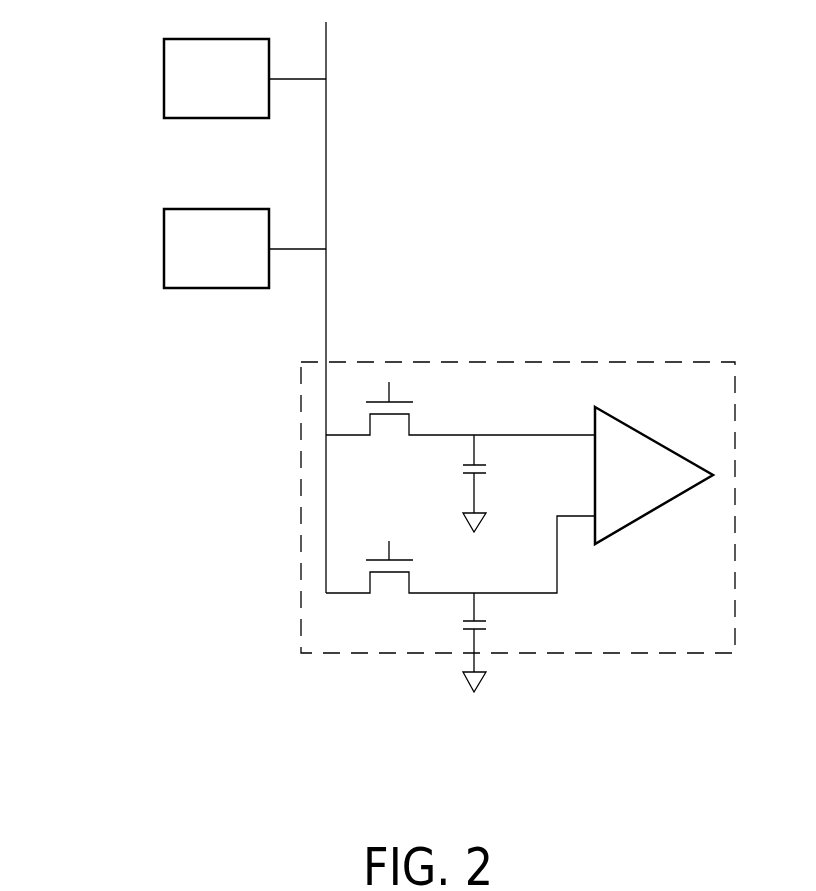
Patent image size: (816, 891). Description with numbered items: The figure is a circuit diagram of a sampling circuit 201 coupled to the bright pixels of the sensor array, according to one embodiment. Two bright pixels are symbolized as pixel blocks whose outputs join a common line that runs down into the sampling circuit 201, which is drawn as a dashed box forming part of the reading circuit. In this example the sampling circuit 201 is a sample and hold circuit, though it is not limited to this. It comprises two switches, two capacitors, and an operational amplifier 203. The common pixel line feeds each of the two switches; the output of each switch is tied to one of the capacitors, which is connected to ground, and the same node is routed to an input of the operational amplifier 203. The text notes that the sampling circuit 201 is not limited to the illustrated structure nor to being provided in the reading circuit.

The sampling circuit 201 is at (518, 499).
The operational amplifier 203 is at (655, 438).